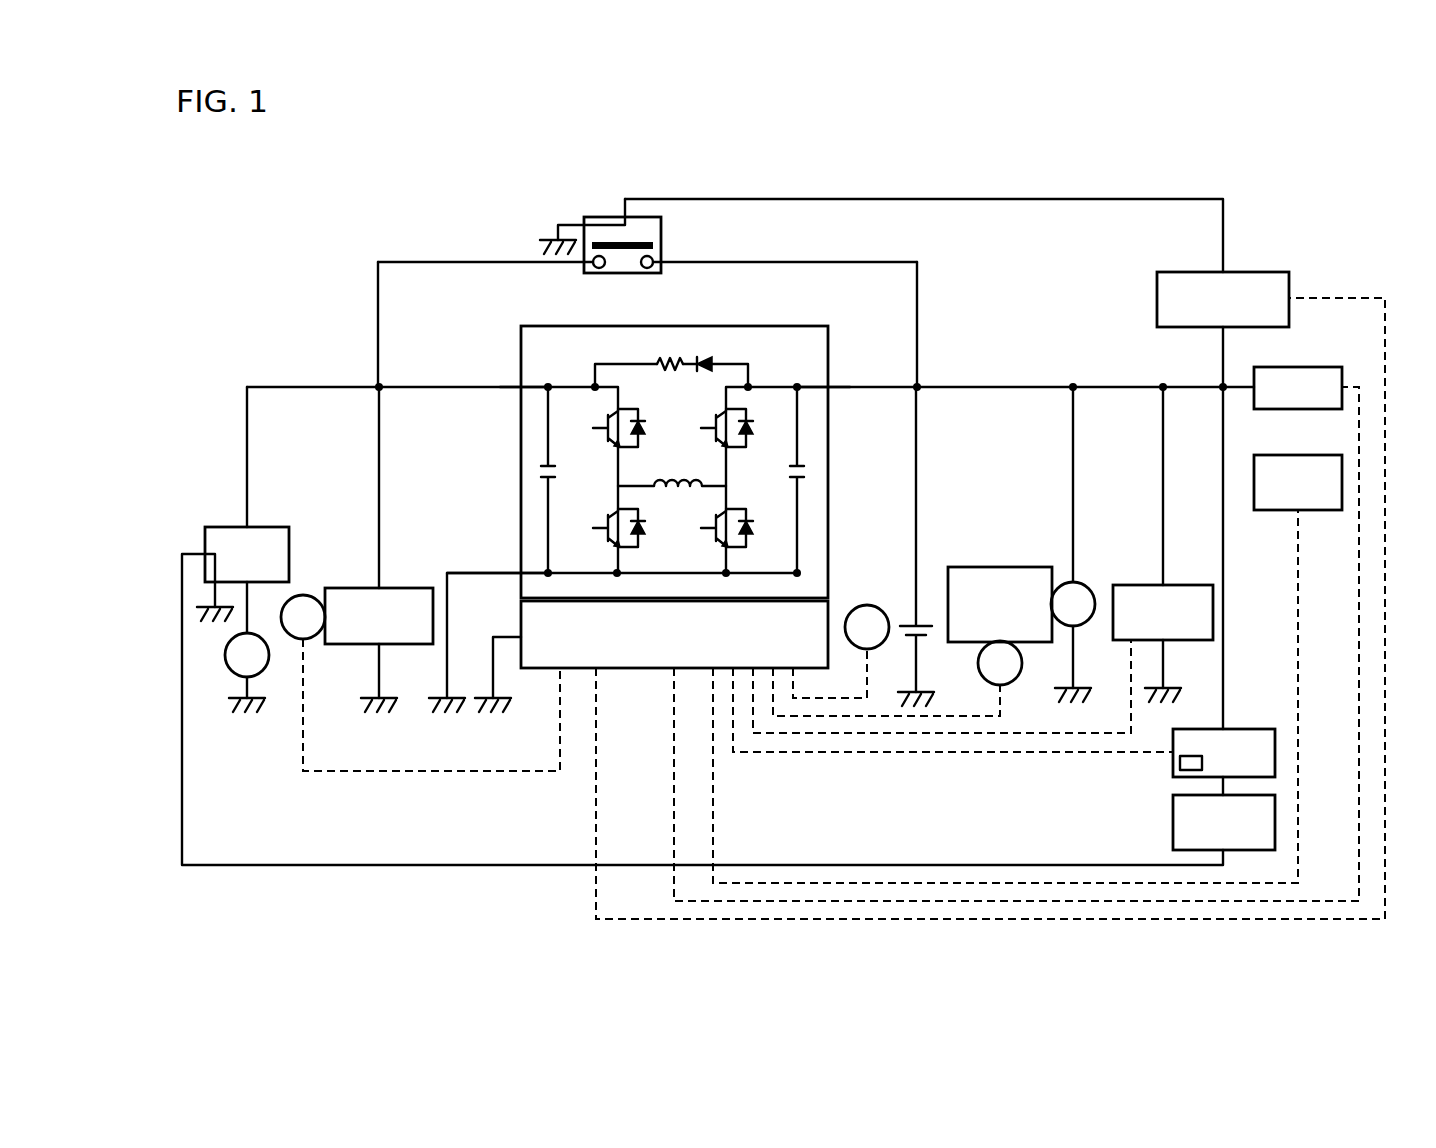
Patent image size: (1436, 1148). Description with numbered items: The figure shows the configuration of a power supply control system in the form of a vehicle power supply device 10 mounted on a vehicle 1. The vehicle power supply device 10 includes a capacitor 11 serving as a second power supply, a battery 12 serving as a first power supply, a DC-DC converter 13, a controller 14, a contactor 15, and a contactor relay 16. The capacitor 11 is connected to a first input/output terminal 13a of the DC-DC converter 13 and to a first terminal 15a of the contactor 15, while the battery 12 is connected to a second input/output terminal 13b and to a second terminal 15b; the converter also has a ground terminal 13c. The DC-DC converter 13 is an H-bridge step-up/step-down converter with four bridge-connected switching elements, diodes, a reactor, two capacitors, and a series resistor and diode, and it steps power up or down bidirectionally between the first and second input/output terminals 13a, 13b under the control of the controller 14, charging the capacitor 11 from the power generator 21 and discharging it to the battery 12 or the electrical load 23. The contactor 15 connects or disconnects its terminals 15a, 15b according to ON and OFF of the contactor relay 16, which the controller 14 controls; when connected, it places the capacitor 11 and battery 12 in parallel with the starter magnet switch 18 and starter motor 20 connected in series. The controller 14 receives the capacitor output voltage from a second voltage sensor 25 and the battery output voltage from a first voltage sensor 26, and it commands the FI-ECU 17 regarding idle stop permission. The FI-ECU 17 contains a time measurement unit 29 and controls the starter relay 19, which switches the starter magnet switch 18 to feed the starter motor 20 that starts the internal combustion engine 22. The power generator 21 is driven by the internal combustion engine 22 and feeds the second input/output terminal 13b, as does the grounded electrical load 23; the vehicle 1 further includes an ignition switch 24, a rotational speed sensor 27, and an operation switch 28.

The vehicle 1 is at (1306, 190).
The vehicle power supply device 10 is at (1042, 172).
The capacitor 11 is at (392, 588).
The battery 12 is at (922, 620).
The DC-DC converter 13 is at (790, 326).
The first input/output terminal 13a is at (521, 386).
The second input/output terminal 13b is at (836, 385).
The ground terminal 13c is at (520, 572).
The controller 14 is at (520, 618).
The contactor 15 is at (661, 234).
The first terminal 15a is at (599, 268).
The second terminal 15b is at (647, 268).
The contactor relay 16 is at (1246, 272).
The FI-ECU 17 is at (1238, 729).
The starter magnet switch 18 is at (272, 526).
The starter relay 19 is at (1173, 824).
The starter motor 20 is at (226, 658).
The power generator 21 is at (1086, 585).
The internal combustion engine 22 is at (1000, 567).
The electrical load 23 is at (1176, 585).
The ignition switch 24 is at (1300, 367).
The second voltage sensor 25 is at (305, 595).
The first voltage sensor 26 is at (870, 605).
The rotational speed sensor 27 is at (1017, 684).
The operation switch 28 is at (1300, 455).
The time measurement unit 29 is at (1180, 765).